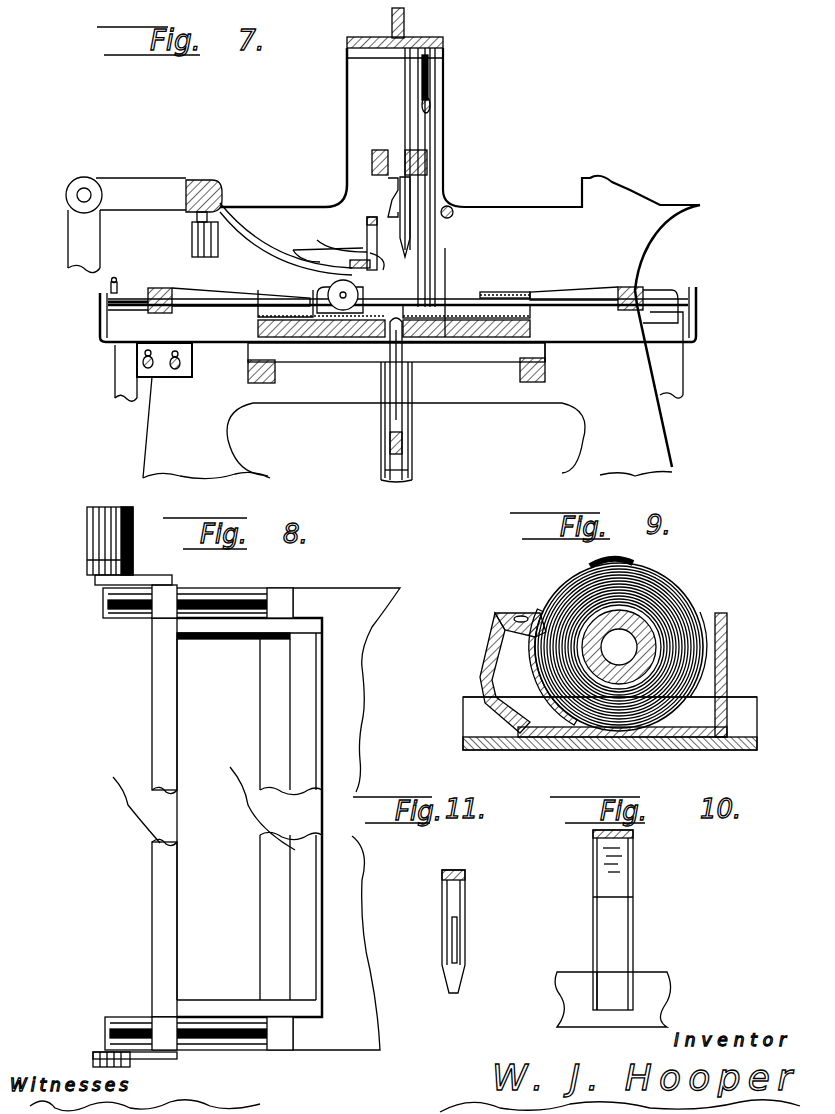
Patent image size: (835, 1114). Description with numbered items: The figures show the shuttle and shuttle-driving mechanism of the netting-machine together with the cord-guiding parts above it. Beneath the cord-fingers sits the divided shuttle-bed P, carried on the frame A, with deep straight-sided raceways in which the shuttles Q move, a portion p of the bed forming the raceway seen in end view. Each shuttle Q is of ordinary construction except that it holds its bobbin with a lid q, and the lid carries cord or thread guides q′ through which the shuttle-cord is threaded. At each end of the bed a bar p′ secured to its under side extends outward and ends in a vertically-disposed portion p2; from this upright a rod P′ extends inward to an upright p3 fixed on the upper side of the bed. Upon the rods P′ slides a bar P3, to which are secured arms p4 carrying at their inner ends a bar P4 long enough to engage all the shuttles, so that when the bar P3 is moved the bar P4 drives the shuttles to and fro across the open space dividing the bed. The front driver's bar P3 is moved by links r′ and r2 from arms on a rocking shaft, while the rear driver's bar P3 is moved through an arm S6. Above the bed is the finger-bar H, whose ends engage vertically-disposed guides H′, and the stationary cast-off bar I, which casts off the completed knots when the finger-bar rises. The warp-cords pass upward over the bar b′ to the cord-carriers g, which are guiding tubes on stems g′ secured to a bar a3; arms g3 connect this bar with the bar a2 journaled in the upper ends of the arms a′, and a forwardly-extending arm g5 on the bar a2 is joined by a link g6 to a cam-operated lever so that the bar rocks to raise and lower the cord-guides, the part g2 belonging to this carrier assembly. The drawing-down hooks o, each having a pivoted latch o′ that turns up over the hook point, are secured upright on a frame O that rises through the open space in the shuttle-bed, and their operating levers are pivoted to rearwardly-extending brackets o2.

In FIG. 7, the frame A is at (334, 412).
In FIG. 7, the shuttle-bed P is at (232, 334).
In FIG. 9, the shuttle-bed P is at (610, 789).
In FIG. 10, the shuttle-bed P is at (650, 1006).
In FIG. 7, the rod P′ is at (690, 314).
In FIG. 8, the rod P′ is at (125, 620).
In FIG. 7, the bar P3 is at (150, 262).
In FIG. 8, the bar P3 is at (160, 753).
In FIG. 7, the bar P4 is at (300, 297).
In FIG. 8, the bar P4 is at (295, 738).
In FIG. 9, the plate p is at (740, 720).
In FIG. 10, the plate p is at (570, 1010).
In FIG. 7, the bar p′ is at (218, 343).
In FIG. 8, the bar p′ is at (215, 596).
In FIG. 7, the vertically-disposed portion p2 is at (104, 320).
In FIG. 8, the vertically-disposed portion p2 is at (135, 600).
In FIG. 8, the upright p3 is at (273, 590).
In FIG. 7, the arms p4 is at (560, 290).
In FIG. 8, the arms p4 is at (223, 640).
In FIG. 7, the link r′ is at (140, 303).
In FIG. 8, the link r′ is at (153, 1060).
In FIG. 8, the link r2 is at (150, 570).
In FIG. 7, the rod or bar b′ is at (108, 298).
In FIG. 7, the shuttle Q is at (337, 307).
In FIG. 9, the shuttle Q is at (503, 612).
In FIG. 10, the shuttle Q is at (600, 882).
In FIG. 9, the lid q is at (567, 600).
In FIG. 9, the cord or thread guides q′ is at (597, 558).
In FIG. 7, the frame O is at (407, 448).
In FIG. 7, the drawing-down hook o is at (404, 349).
In FIG. 11, the drawing-down hook o is at (450, 882).
In FIG. 7, the pivoted latch o′ is at (388, 349).
In FIG. 11, the pivoted latch o′ is at (461, 960).
In FIG. 7, the bracket o2 is at (384, 474).
In FIG. 7, the cord-carrier g is at (368, 232).
In FIG. 7, the standard or stem g′ is at (387, 275).
In FIG. 7, the lever link g2 is at (328, 233).
In FIG. 7, the arm g3 is at (285, 269).
In FIG. 7, the arm g5 is at (99, 184).
In FIG. 7, the link g6 is at (70, 258).
In FIG. 7, the arm a′ is at (215, 255).
In FIG. 7, the bar a2 is at (200, 180).
In FIG. 7, the bar a3 is at (295, 239).
In FIG. 7, the finger-bar H is at (410, 148).
In FIG. 7, the guide H′ is at (419, 78).
In FIG. 7, the cast-off bar I is at (369, 164).
In FIG. 7, the arm S6 is at (670, 360).